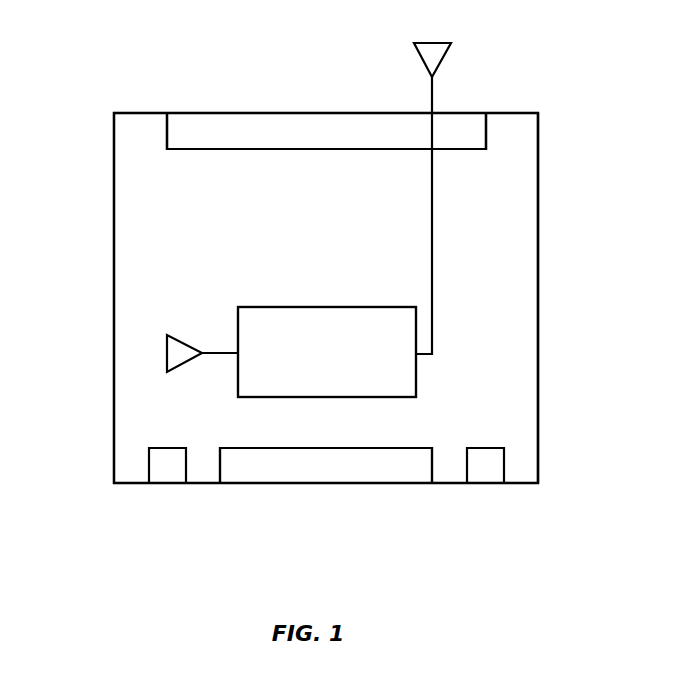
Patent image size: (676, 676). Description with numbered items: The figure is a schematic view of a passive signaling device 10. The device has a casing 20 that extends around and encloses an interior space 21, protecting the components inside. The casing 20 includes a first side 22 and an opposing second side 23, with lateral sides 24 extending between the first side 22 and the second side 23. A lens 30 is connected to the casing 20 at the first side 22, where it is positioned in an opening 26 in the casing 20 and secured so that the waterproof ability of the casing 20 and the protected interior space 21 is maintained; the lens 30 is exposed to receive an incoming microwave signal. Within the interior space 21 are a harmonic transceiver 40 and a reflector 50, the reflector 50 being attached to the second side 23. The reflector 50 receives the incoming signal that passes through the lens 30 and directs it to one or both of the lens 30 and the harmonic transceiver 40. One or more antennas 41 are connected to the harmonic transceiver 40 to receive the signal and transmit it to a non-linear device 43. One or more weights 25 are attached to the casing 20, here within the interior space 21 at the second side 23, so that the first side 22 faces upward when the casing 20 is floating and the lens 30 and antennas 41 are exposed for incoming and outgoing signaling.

The signaling device 10 is at (582, 155).
The casing 20 is at (113, 242).
The interior space 21 is at (152, 277).
The first side 22 is at (467, 112).
The second side 23 is at (203, 484).
The lateral sides 24 is at (540, 282).
The weights 25 is at (168, 466).
The opening 26 is at (168, 130).
The lens 30 is at (252, 92).
The harmonic transceiver 40 is at (293, 290).
The antennas 41 is at (432, 57).
The non-linear device 43 is at (314, 357).
The reflector 50 is at (365, 502).